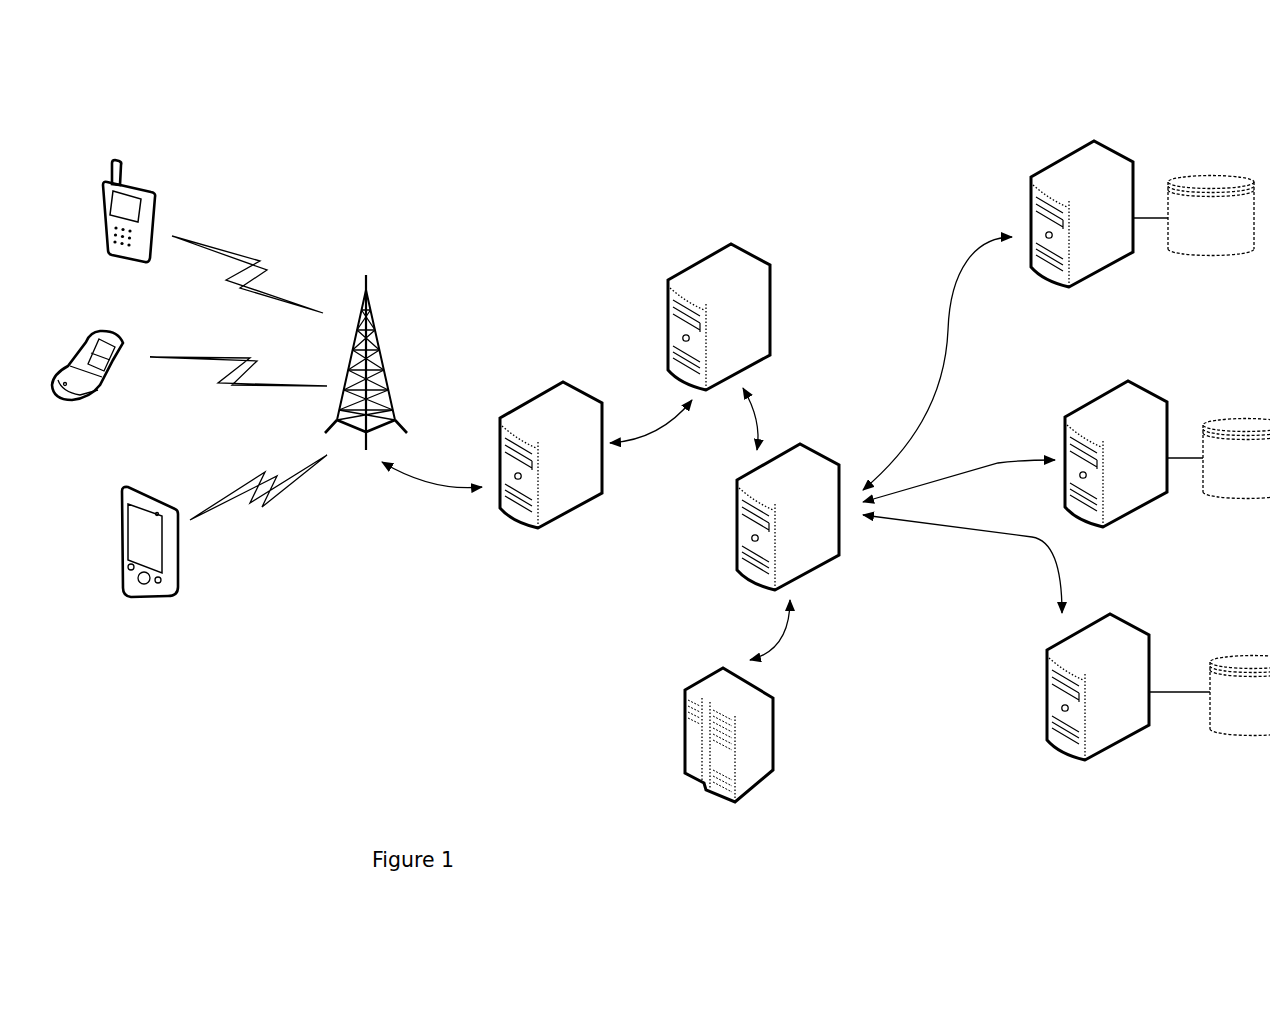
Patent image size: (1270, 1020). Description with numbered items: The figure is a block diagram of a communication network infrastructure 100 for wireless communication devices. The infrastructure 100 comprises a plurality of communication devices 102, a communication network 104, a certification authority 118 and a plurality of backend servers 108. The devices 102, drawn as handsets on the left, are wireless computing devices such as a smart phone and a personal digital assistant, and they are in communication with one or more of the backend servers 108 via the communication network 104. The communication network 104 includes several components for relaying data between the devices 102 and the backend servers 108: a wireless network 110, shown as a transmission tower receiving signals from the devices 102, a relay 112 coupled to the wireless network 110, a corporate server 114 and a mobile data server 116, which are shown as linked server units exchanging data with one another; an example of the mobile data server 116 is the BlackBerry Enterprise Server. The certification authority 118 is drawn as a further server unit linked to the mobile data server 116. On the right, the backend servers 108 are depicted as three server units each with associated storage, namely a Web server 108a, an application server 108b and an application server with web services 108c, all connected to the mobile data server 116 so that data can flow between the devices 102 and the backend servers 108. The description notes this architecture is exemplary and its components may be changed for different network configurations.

The communication network infrastructure 100 is at (555, 143).
The communication devices 102 is at (103, 215).
The communication network 104 is at (582, 300).
The backend servers 108 is at (1141, 408).
The Web server 108a is at (1087, 152).
The application server 108b is at (1122, 397).
The application server with web services 108c is at (1115, 628).
The wireless network 110 is at (383, 373).
The relay 112 is at (583, 493).
The corporate server 114 is at (762, 272).
The mobile data server 116 is at (743, 528).
The certification authority 118 is at (770, 763).